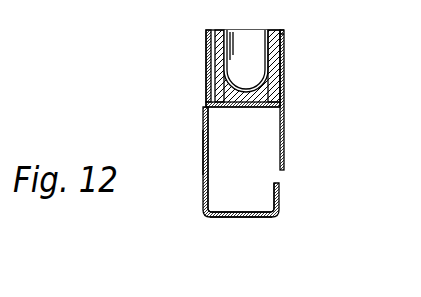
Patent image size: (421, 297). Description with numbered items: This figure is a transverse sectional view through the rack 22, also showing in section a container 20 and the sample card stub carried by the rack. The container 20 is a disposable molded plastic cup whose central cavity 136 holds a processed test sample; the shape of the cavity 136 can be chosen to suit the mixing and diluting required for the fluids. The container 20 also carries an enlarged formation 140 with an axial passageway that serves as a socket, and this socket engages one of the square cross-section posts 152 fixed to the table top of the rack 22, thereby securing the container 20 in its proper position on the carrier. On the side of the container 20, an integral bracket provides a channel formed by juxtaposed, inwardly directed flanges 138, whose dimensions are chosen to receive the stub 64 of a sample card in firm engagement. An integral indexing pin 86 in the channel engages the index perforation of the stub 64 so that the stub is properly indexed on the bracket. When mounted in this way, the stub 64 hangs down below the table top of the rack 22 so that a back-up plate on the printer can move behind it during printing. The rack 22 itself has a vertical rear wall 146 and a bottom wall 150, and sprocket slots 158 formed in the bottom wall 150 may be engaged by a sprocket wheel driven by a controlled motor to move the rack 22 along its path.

The container 20 is at (220, 25).
The rack 22 is at (199, 171).
The stub 64 is at (283, 143).
The indexing pin 86 is at (285, 37).
The central cavity 136 is at (249, 67).
The inwardly directed flanges 138 is at (285, 89).
The enlarged formation 140 is at (213, 85).
The vertical rear wall 146 is at (203, 148).
The bottom wall 150 is at (263, 218).
The square cross-section post 152 is at (212, 53).
The sprocket slots 158 is at (242, 212).